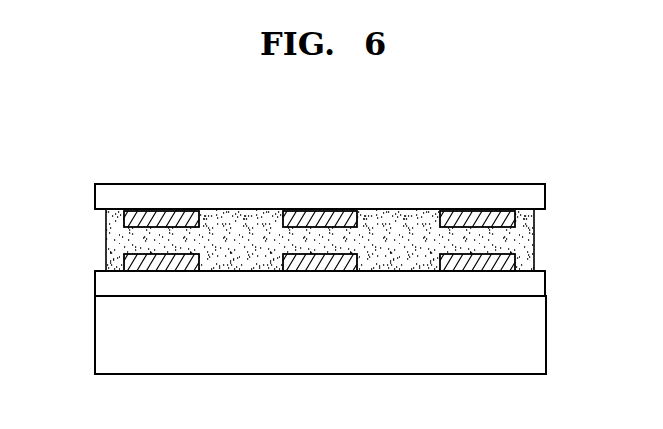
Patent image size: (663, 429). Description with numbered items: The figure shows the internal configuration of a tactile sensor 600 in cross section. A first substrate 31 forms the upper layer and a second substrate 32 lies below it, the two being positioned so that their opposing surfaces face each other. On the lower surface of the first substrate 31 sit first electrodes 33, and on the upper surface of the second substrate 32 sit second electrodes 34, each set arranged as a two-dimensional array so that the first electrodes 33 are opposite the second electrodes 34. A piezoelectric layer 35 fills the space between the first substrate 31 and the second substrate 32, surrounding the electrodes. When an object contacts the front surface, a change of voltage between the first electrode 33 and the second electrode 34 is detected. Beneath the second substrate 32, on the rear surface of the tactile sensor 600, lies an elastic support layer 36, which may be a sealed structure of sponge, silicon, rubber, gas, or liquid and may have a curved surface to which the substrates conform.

The tactile sensor 600 is at (527, 141).
The first substrate 31 is at (532, 196).
The second substrate 32 is at (532, 283).
The first electrode 33 is at (510, 220).
The second electrode 34 is at (510, 260).
The piezoelectric layer 35 is at (115, 236).
The support layer 36 is at (533, 332).